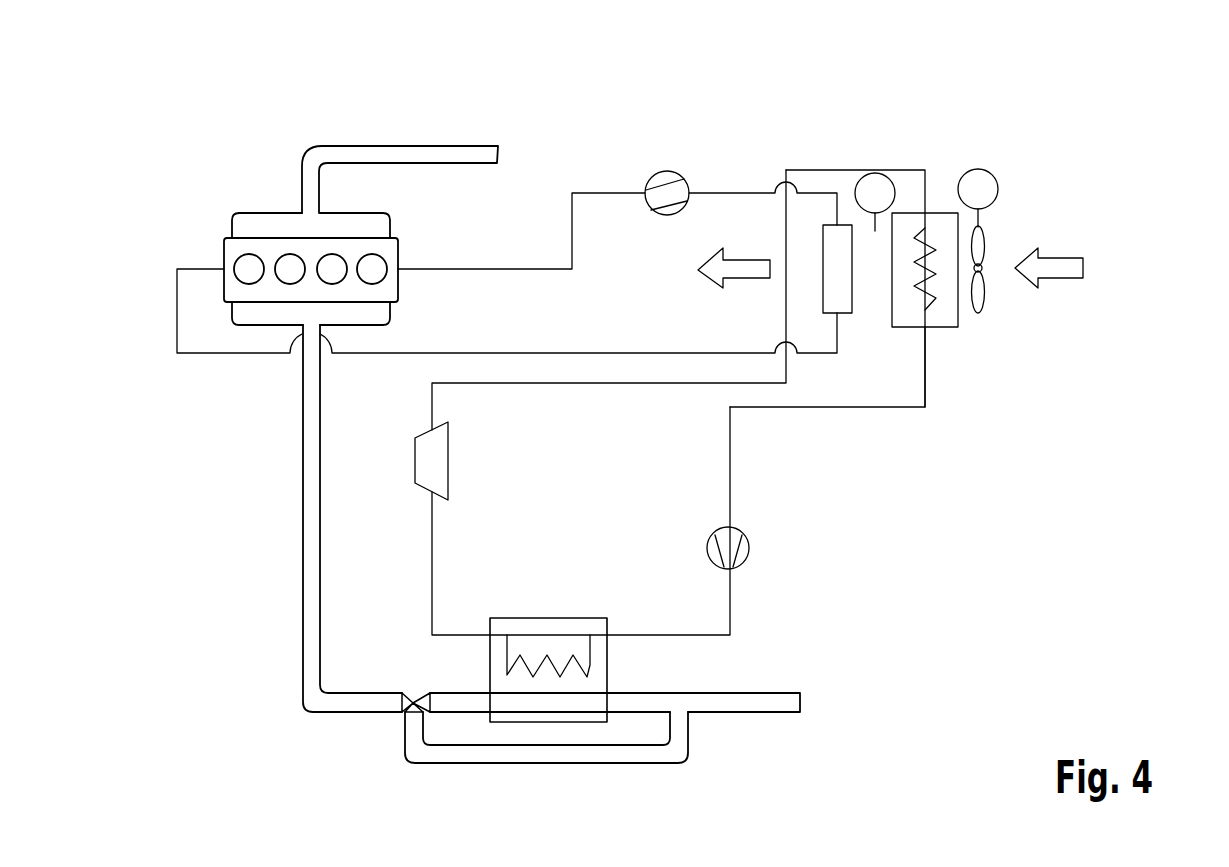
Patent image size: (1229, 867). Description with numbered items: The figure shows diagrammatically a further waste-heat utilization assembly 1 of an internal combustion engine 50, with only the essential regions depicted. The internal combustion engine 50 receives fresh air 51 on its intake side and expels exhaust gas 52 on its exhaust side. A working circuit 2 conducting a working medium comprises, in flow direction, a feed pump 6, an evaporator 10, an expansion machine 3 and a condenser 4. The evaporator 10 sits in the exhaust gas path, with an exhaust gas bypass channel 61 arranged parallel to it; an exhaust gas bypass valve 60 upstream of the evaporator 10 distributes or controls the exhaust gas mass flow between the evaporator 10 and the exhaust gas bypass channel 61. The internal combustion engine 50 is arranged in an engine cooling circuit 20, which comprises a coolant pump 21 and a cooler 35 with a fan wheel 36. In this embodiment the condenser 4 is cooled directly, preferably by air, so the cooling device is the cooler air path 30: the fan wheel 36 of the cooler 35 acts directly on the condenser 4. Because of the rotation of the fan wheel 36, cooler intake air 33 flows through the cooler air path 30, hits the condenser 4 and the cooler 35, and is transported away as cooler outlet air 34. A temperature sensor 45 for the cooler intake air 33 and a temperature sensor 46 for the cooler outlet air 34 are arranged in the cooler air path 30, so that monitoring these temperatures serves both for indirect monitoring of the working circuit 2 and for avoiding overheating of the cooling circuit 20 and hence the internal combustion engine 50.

The waste-heat utilization assembly 1 is at (1078, 126).
The working circuit 2 is at (793, 452).
The expansion machine 3 is at (448, 440).
The condenser 4 is at (895, 323).
The feed pump 6 is at (741, 532).
The evaporator 10 is at (547, 625).
The engine cooling circuit 20 is at (502, 154).
The coolant pump 21 is at (665, 215).
The cooler air path 30 is at (1090, 216).
The cooler intake air 33 is at (1083, 268).
The cooler outlet air 34 is at (740, 279).
The cooler 35 is at (823, 236).
The fan wheel 36 is at (983, 297).
The temperature sensor 45 is at (994, 177).
The temperature sensor 46 is at (875, 173).
The internal combustion engine 50 is at (396, 241).
The fresh air 51 is at (482, 232).
The exhaust gas 52 is at (777, 703).
The exhaust gas bypass valve 60 is at (402, 716).
The exhaust gas bypass channel 61 is at (550, 764).